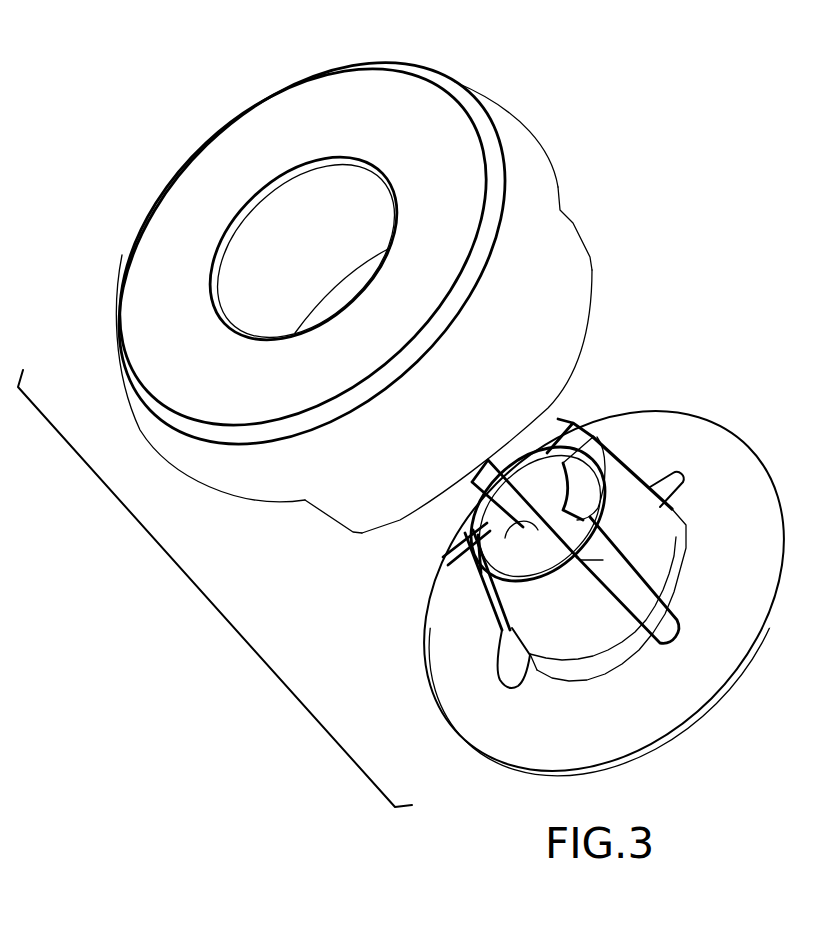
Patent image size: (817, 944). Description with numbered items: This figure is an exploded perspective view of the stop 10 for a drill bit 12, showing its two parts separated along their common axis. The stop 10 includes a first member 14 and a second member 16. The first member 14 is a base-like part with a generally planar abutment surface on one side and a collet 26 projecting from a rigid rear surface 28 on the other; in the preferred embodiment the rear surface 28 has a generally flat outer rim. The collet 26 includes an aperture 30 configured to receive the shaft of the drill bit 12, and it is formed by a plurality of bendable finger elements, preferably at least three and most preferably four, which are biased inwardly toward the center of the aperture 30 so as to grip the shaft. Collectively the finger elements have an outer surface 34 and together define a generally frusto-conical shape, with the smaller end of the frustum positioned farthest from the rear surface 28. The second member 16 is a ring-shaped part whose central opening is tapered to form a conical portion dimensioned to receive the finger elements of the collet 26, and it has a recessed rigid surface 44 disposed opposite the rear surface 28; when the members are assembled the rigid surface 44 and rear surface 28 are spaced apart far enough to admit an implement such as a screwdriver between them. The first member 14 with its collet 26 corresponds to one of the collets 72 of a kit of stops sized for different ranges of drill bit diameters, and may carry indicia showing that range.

The stop 10 is at (205, 596).
The drill bit 12 is at (3, 188).
The first member 14 is at (724, 433).
The second member 16 is at (495, 122).
The collet 26 is at (626, 432).
The rear surface 28 is at (746, 562).
The aperture 30 is at (540, 480).
The outer surface 34 is at (523, 607).
The rigid surface 44 is at (562, 190).
The collet 72 is at (300, 117).